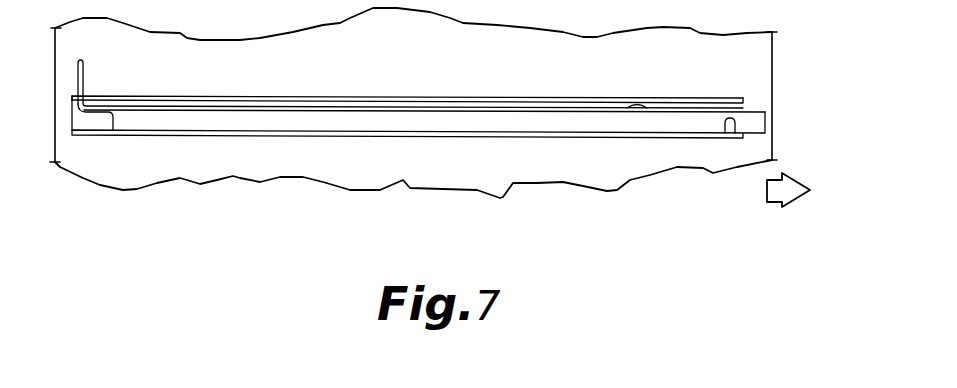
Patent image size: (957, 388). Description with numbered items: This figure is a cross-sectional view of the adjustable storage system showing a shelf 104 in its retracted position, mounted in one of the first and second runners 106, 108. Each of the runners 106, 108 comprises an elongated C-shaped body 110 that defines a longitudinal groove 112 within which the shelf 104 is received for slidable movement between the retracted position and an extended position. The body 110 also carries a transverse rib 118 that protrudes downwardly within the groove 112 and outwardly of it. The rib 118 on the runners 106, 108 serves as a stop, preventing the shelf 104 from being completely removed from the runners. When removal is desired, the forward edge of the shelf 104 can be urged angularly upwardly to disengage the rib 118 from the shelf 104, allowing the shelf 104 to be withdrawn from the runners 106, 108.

The shelf 104 is at (762, 122).
The first runner 106 is at (318, 97).
The second runner 108 is at (407, 78).
The C-shaped body 110 is at (461, 97).
The longitudinal groove 112 is at (102, 122).
The transverse rib 118 is at (642, 108).